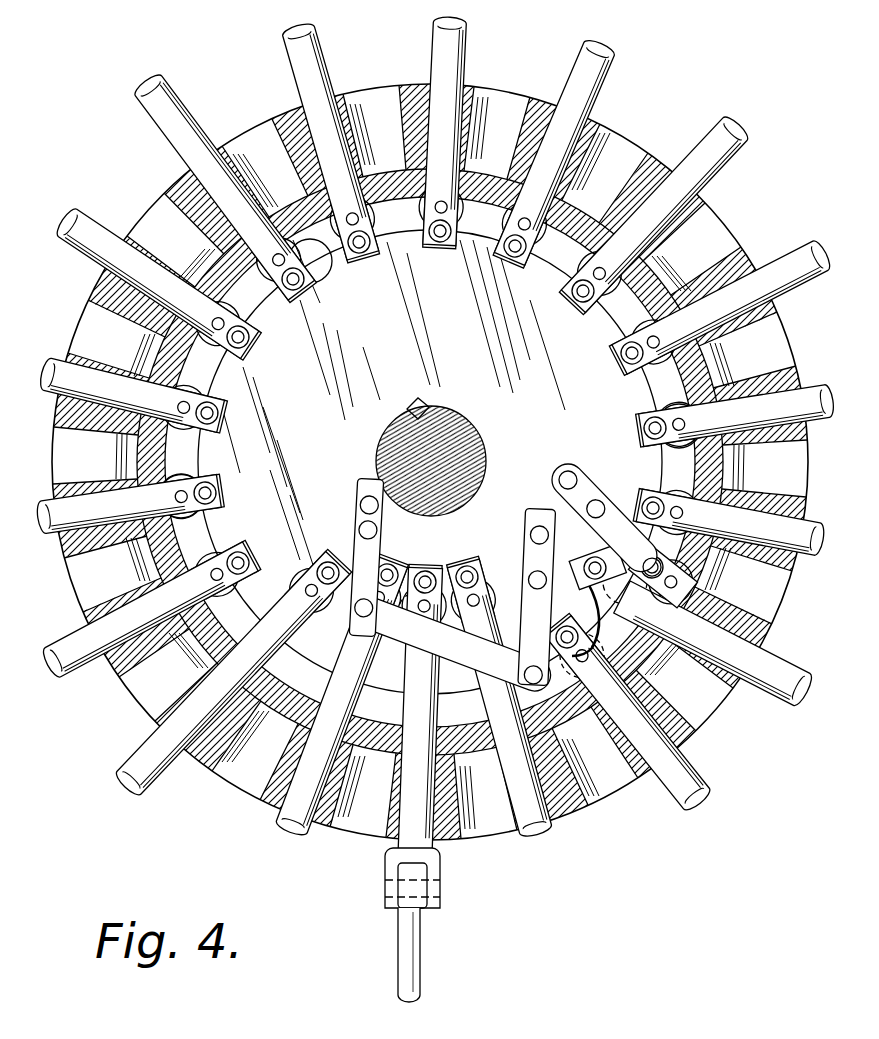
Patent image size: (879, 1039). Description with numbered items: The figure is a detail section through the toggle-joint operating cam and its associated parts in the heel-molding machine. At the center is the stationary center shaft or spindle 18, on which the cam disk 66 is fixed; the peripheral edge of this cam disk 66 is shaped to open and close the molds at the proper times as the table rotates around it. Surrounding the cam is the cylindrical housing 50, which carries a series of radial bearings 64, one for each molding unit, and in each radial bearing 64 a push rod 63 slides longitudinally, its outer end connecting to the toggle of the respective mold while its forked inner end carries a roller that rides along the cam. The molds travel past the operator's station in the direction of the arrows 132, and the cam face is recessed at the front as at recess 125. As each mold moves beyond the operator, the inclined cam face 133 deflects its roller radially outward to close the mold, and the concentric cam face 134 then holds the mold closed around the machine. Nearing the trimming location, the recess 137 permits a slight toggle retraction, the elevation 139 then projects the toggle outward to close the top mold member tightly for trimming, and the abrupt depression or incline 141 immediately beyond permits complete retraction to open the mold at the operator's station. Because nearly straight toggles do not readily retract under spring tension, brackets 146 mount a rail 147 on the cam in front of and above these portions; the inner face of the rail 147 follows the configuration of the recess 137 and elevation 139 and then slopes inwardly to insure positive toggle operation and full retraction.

The stationary center shaft or spindle 18 is at (450, 428).
The cylindrical housing 50 is at (556, 722).
The push rod 63 is at (165, 782).
The radial bearing 64 is at (127, 650).
The cam disk 66 is at (382, 337).
The recess 125 is at (440, 628).
The arrows 132 is at (463, 932).
The inclined cam face 133 is at (279, 565).
The concentric cam face 134 is at (319, 269).
The recess 137 is at (607, 520).
The elevation 139 is at (591, 600).
The abrupt depression or incline 141 is at (508, 578).
The brackets 146 is at (358, 512).
The rail 147 is at (523, 702).